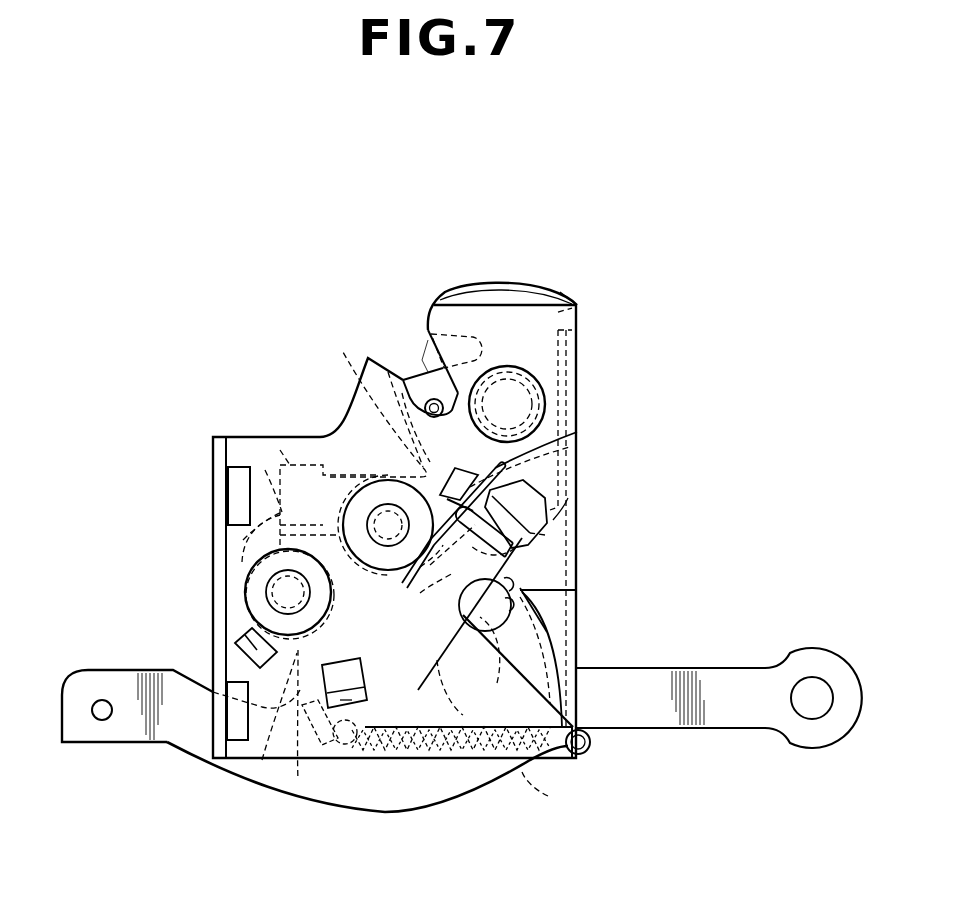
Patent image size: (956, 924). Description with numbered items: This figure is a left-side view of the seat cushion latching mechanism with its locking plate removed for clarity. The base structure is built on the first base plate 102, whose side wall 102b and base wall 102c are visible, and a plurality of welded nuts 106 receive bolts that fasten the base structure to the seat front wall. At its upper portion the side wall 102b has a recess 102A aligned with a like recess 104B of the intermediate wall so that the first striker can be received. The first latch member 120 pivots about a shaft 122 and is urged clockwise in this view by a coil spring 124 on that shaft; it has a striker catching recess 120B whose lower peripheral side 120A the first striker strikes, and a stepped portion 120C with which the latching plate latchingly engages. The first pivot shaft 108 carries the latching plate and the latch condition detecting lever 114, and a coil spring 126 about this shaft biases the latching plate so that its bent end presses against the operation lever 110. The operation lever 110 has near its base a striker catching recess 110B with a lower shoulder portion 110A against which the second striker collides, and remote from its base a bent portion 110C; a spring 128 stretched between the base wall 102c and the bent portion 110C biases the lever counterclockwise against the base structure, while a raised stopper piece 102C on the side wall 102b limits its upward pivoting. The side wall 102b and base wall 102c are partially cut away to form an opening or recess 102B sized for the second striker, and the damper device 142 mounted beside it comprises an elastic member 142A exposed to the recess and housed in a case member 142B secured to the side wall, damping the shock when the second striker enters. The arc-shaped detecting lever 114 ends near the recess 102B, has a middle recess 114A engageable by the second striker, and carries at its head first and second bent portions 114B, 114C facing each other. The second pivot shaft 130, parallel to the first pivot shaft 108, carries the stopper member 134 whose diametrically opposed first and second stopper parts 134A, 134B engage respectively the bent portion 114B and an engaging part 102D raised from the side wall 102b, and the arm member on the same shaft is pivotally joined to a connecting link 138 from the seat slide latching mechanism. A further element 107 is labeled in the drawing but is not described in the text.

The first base plate 102 is at (577, 395).
The recess 102A is at (381, 274).
The recess 104B is at (417, 366).
The opening or recess 102B is at (545, 567).
The side wall 102b is at (553, 520).
The raised stopper piece 102C is at (346, 700).
The base wall 102c is at (579, 352).
The engaging part 102D is at (242, 662).
The welded nuts 106 is at (236, 490).
The pin seat 107 is at (557, 791).
The first pivot shaft 108 is at (378, 500).
The operation lever 110 is at (396, 795).
The lower shoulder portion 110A is at (552, 612).
The striker catching recess 110B is at (560, 608).
The bent portion 110C is at (298, 780).
The latch condition detecting lever 114 is at (330, 470).
The recess 114A is at (545, 535).
The first bent portion 114B is at (280, 450).
The second bent portion 114C is at (265, 470).
The first latch member 120 is at (507, 290).
The lower peripheral side 120A is at (412, 382).
The striker catching recess 120B is at (452, 333).
The stepped portion 120C is at (370, 401).
The shaft 122 is at (582, 306).
The coil spring 124 is at (513, 397).
The coil spring 126 is at (577, 432).
The spring 128 is at (590, 740).
The second pivot shaft 130 is at (264, 593).
The stopper member 134 is at (253, 553).
The first stopper part 134A is at (243, 540).
The second stopper part 134B is at (262, 760).
The connecting link 138 is at (811, 648).
The damper device 142 is at (463, 652).
The elastic member 142A is at (507, 668).
The case member 142B is at (530, 483).